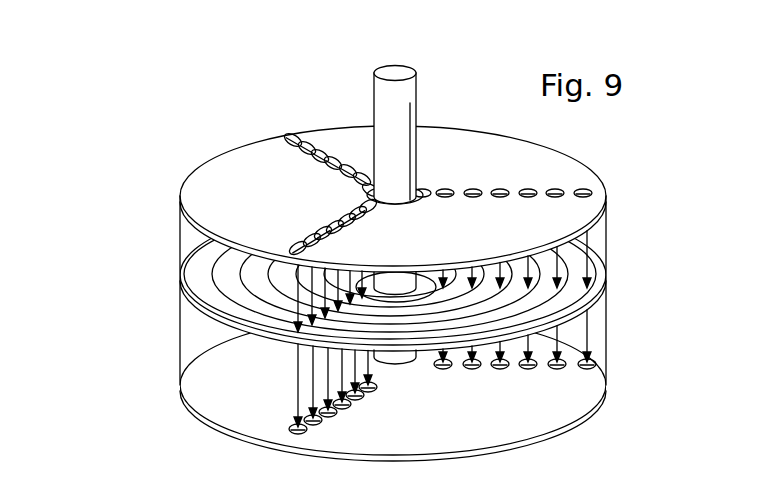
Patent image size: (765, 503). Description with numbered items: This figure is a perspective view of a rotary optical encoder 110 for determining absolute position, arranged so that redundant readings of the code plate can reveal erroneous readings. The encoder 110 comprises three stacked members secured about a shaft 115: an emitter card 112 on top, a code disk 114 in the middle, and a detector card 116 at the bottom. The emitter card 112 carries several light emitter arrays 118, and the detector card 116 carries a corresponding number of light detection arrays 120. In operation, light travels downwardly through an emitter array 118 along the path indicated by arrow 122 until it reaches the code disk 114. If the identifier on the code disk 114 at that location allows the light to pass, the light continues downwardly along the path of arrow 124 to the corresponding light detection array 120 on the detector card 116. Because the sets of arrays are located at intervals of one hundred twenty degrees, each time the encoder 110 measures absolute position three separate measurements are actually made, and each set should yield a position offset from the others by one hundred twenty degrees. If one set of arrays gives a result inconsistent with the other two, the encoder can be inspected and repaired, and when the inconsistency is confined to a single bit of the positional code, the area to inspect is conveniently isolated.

The optical encoder 110 is at (180, 230).
The emitter card 112 is at (246, 160).
The code disk 114 is at (203, 290).
The shaft 115 is at (393, 70).
The detector card 116 is at (505, 430).
The light emitter arrays 118 is at (584, 193).
The light detection arrays 120 is at (597, 364).
The arrow 122 is at (593, 240).
The arrow 124 is at (593, 322).